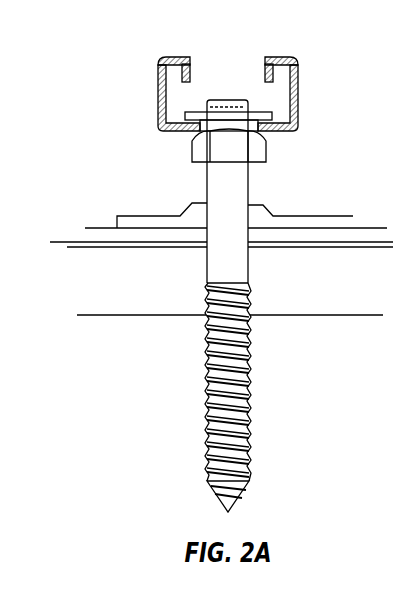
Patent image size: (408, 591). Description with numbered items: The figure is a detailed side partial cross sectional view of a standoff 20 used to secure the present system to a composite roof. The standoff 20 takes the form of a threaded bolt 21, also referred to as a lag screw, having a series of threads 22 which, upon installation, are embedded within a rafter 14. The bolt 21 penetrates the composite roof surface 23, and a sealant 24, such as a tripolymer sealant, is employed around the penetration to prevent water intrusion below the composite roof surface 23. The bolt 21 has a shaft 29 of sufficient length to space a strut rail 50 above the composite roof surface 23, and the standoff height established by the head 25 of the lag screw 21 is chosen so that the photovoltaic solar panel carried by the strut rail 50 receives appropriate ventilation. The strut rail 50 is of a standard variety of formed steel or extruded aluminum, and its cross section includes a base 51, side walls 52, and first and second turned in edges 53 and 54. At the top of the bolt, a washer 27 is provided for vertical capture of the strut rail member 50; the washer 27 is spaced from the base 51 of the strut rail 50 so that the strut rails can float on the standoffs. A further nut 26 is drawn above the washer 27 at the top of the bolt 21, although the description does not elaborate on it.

The standoff 20 is at (97, 158).
The strut rail 50 is at (157, 100).
The side walls 52 is at (157, 61).
The first turned in edge 53 is at (189, 73).
The second turned in edge 54 is at (266, 73).
The base 51 is at (181, 120).
The washer 27 is at (192, 113).
The upper nut 26 is at (220, 100).
The head 25 is at (191, 143).
The threaded bolt 21 is at (248, 262).
The shaft 29 is at (235, 193).
The threads 22 is at (250, 400).
The sealant 24 is at (200, 207).
The composite roof surface 23 is at (320, 222).
The rafter 14 is at (123, 405).